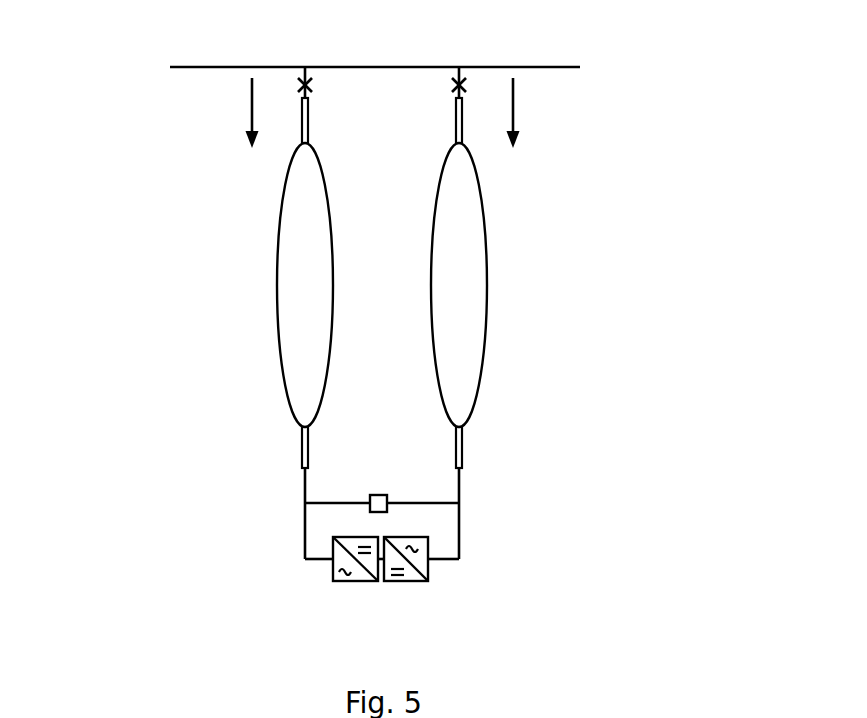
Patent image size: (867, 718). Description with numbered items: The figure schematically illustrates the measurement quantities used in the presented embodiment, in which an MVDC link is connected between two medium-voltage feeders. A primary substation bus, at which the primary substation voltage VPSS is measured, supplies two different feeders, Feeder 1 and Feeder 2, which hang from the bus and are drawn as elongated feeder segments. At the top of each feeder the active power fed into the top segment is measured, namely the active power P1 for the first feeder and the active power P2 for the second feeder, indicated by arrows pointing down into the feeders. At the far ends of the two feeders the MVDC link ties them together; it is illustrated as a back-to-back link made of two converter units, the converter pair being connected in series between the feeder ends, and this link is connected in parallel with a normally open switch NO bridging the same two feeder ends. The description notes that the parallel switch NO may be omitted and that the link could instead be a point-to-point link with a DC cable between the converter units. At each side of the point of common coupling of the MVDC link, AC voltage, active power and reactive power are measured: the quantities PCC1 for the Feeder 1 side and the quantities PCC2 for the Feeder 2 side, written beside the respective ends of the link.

The primary substation voltage VPSS is at (375, 53).
The active power fed into top segment of Feeder 1 P1 is at (226, 113).
The active power fed into top segment of Feeder 2 P2 is at (544, 113).
The Feeder 1 Feeder1 is at (305, 313).
The Feeder 2 Feeder2 is at (459, 313).
The normally open switch NO is at (382, 488).
The back-to-back MVDC link converters converter is at (382, 559).
The PCC measurement quantities for Feeder 1 PCC1 is at (162, 537).
The PCC measurement quantities for Feeder 2 PCC2 is at (606, 537).